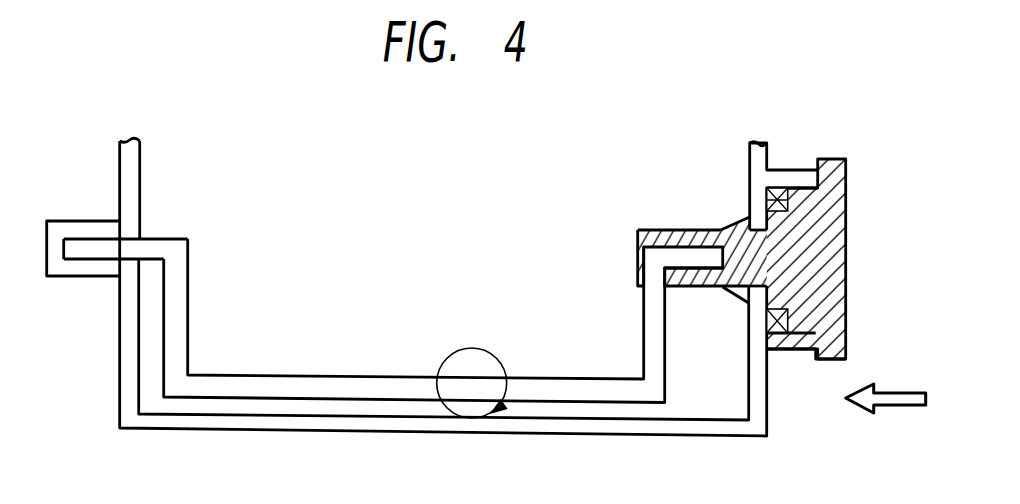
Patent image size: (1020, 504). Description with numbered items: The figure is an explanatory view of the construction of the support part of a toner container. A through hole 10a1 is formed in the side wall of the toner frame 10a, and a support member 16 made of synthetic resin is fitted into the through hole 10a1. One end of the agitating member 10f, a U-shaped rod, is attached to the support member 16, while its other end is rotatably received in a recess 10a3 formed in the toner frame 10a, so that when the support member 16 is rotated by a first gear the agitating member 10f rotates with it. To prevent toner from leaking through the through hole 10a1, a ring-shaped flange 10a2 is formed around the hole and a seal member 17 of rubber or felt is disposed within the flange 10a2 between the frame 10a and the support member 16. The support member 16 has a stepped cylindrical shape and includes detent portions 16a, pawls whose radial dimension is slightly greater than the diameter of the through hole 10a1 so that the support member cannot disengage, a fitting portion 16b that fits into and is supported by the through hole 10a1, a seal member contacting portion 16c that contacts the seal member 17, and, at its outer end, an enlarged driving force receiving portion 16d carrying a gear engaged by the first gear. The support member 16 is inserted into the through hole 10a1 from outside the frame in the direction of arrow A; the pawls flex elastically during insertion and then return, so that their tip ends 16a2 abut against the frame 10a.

The toner frame 10a is at (668, 428).
The through hole 10a1 is at (743, 284).
The ring-shaped flange 10a2 is at (790, 170).
The recess 10a3 is at (85, 273).
The agitating member 10f is at (381, 386).
The support member 16 is at (852, 166).
The detent portions 16a is at (745, 217).
The tip ends 16a2 is at (750, 227).
The fitting portion 16b is at (720, 288).
The seal member contacting portion 16c is at (789, 200).
The driving force receiving portion 16d is at (828, 360).
The seal member 17 is at (776, 336).
The insertion direction arrow A is at (898, 404).